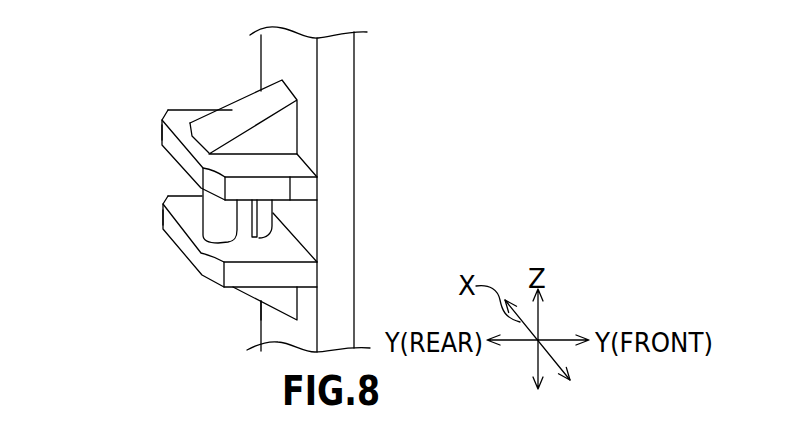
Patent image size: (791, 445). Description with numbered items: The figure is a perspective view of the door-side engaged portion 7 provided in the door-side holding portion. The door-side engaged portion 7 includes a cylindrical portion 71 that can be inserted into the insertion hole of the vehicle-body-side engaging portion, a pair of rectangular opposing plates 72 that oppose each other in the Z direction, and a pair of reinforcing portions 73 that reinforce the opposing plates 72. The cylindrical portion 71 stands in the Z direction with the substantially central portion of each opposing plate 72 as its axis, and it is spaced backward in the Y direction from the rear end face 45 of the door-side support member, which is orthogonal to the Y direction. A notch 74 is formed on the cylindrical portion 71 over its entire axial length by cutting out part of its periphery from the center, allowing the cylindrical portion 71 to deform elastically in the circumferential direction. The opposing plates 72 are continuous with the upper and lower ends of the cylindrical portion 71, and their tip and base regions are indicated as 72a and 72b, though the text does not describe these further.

The door-side engaged portion 7 is at (234, 199).
The rear end face 45 is at (277, 45).
The cylindrical portion 71 is at (167, 248).
The opposing plate 72 is at (234, 179).
The tip portion of arm 72a is at (168, 139).
The base portion of arm 72b is at (168, 108).
The reinforcing portion 73 is at (265, 97).
The notch 74 is at (226, 238).